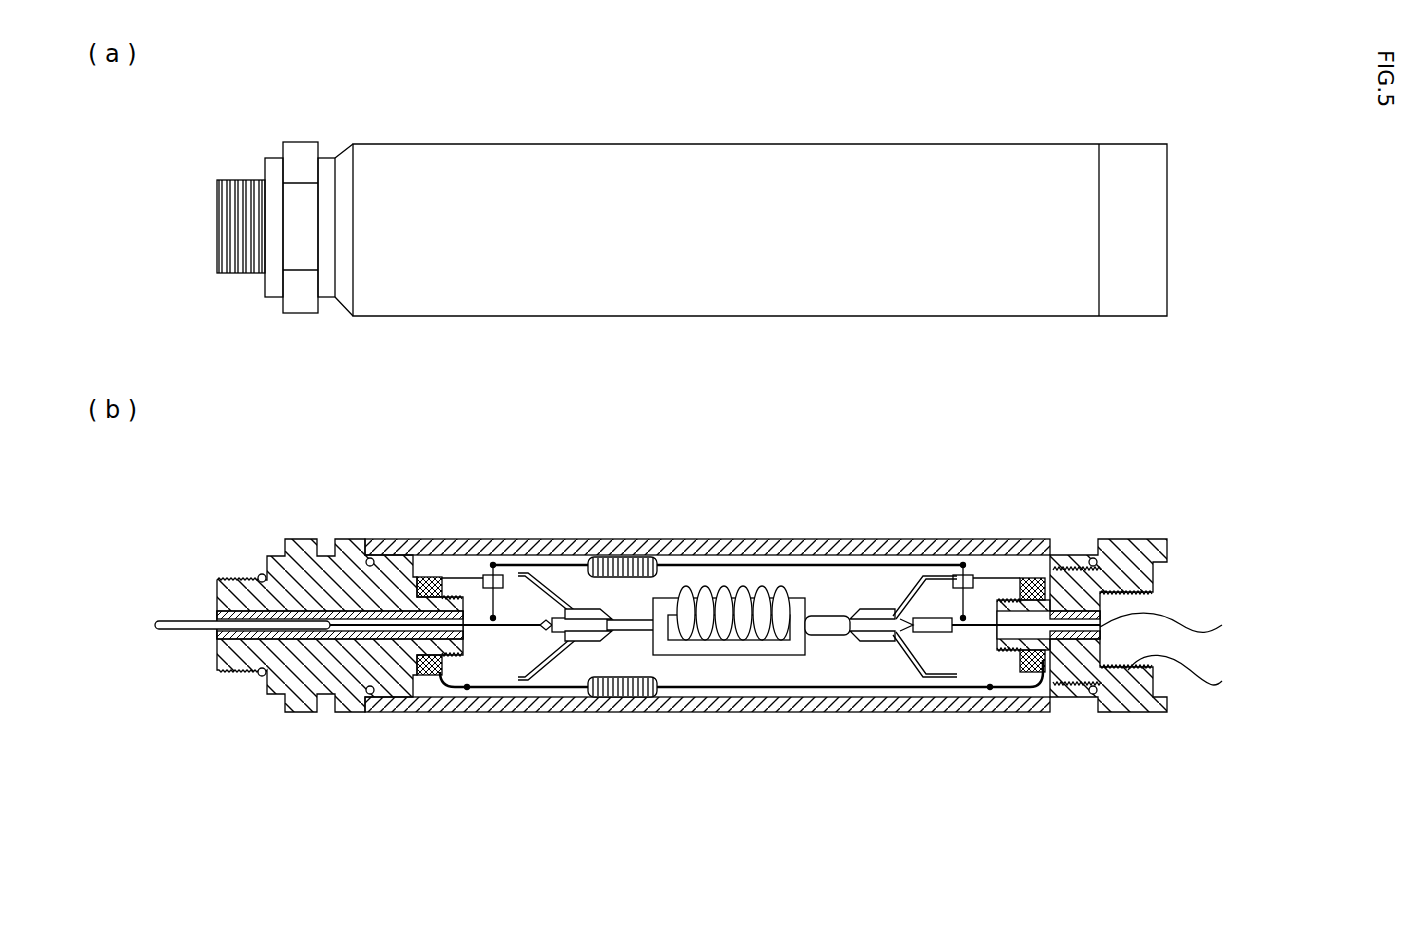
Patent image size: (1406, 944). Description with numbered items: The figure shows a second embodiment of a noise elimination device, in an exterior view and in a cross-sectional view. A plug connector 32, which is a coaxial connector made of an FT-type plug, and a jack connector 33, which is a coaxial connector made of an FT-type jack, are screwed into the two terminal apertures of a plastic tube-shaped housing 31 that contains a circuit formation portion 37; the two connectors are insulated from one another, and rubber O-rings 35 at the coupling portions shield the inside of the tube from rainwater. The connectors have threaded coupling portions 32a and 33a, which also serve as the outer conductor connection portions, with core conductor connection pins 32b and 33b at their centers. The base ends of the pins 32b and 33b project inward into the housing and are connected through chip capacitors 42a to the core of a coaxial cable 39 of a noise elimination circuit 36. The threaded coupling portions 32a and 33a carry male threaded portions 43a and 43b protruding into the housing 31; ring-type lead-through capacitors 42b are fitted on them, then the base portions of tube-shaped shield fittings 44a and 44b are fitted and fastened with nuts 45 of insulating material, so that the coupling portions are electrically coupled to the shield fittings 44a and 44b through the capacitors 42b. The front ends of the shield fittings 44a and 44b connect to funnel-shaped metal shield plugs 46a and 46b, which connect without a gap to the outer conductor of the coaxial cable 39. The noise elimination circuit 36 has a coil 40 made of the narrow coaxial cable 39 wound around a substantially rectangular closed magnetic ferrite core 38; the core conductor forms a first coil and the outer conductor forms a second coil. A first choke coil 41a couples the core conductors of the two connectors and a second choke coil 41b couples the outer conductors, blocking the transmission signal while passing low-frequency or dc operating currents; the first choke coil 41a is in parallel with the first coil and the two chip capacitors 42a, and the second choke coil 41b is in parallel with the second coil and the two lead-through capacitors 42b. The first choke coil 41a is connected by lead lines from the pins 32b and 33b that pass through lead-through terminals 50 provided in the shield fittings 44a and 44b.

The tube-shaped housing 31 is at (820, 175).
The plug connector 32 is at (187, 185).
The threaded coupling portion 32a is at (220, 580).
The core conductor connection pin 32b is at (200, 621).
The jack connector 33 is at (1190, 210).
The threaded coupling portion 33a is at (1222, 681).
The core conductor connection pin 33b is at (1222, 625).
The rubber O-ring 35 is at (262, 574).
The noise elimination circuit 36 is at (728, 588).
The circuit formation portion 37 is at (824, 684).
The closed magnetic ferrite core 38 is at (760, 656).
The coaxial cable 39 is at (826, 615).
The coil 40 is at (735, 643).
The first choke coil 41a is at (594, 558).
The second choke coil 41b is at (636, 696).
The chip capacitor 42a is at (522, 636).
The ring-type lead-through capacitor 42b is at (425, 577).
The male threaded portion 43a is at (478, 650).
The male threaded portion 43b is at (958, 576).
The shield fitting 44a is at (480, 578).
The shield fitting 44b is at (995, 670).
The nut 45 is at (1032, 578).
The shield plug 46a is at (565, 650).
The shield plug 46b is at (915, 670).
The lead-through terminal 50 is at (493, 568).